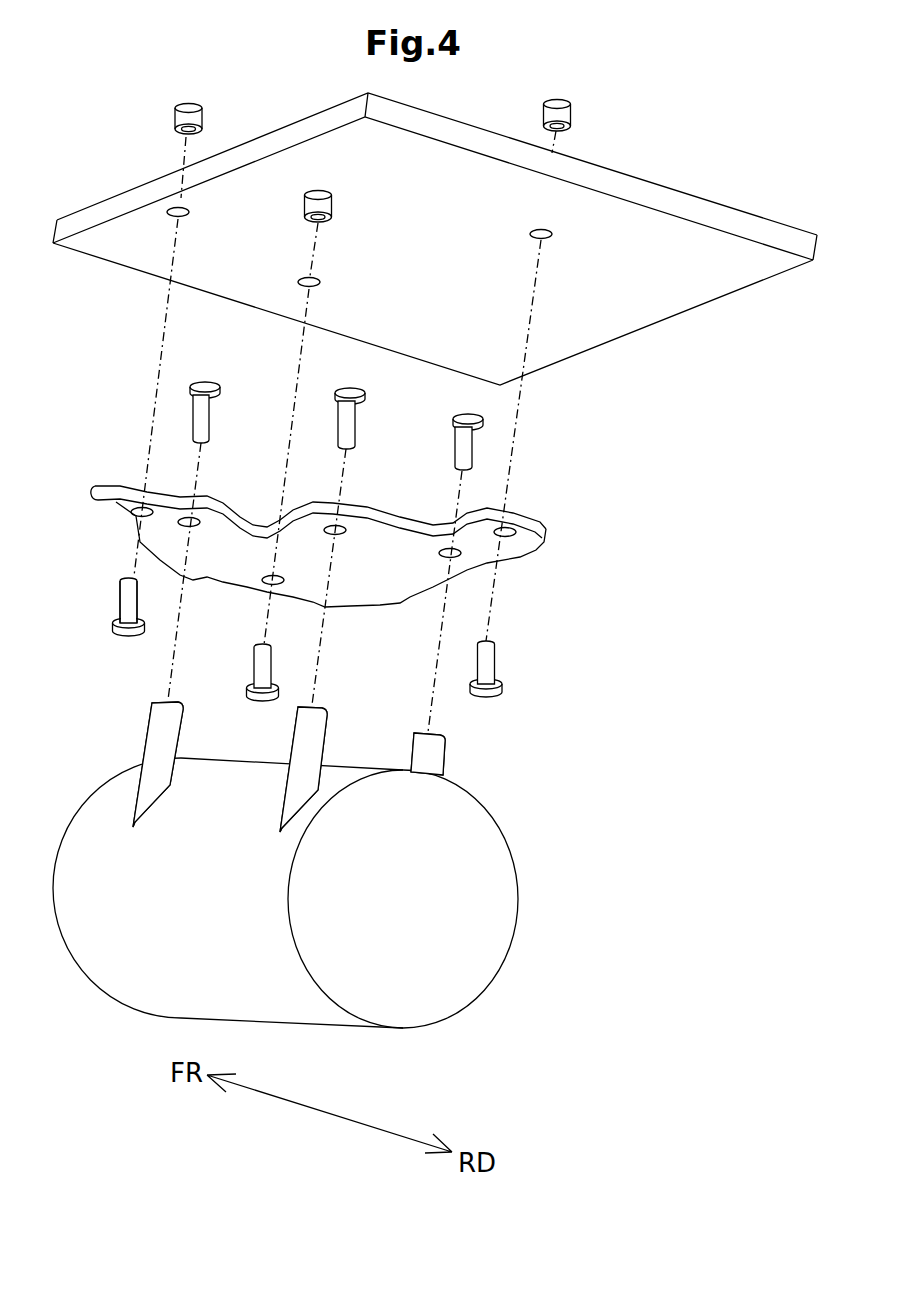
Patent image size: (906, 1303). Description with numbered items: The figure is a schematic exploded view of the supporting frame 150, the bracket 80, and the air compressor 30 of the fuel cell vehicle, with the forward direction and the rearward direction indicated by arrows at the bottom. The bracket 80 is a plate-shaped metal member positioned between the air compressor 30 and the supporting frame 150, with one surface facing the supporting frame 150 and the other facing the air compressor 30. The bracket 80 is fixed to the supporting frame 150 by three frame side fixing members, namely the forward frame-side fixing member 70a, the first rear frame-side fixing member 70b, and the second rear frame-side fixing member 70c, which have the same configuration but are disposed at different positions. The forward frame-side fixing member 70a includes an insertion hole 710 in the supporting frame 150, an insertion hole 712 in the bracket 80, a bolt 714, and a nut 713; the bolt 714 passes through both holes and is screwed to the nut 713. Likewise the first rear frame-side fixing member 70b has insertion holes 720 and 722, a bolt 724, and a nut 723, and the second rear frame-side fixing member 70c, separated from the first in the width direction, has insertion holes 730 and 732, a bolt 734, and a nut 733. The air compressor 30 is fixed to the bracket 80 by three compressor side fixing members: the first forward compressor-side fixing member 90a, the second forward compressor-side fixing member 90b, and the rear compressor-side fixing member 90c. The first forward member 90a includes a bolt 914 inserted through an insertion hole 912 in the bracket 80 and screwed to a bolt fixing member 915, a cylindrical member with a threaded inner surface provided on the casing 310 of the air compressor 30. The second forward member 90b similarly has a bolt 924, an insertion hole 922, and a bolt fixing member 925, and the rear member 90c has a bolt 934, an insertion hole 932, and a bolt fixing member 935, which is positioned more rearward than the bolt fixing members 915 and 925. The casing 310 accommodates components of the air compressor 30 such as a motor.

The supporting frame 150 is at (712, 216).
The forward frame-side fixing member 70a is at (105, 370).
The first rear frame-side fixing member 70b is at (251, 398).
The second rear frame-side fixing member 70c is at (597, 399).
The nut 713 is at (175, 112).
The insertion hole 710 is at (172, 217).
The insertion hole 712 is at (136, 516).
The bolt 714 is at (122, 598).
The nut 723 is at (303, 203).
The insertion hole 720 is at (303, 288).
The insertion hole 722 is at (262, 583).
The bolt 724 is at (254, 675).
The nut 733 is at (572, 115).
The insertion hole 730 is at (546, 240).
The insertion hole 732 is at (512, 537).
The bolt 734 is at (496, 660).
The bracket 80 is at (561, 518).
The first forward compressor-side fixing member 90a is at (325, 601).
The second forward compressor-side fixing member 90b is at (163, 604).
The rear compressor-side fixing member 90c is at (467, 594).
The bolt 914 is at (353, 392).
The insertion hole 912 is at (343, 534).
The bolt fixing member 915 is at (308, 726).
The bolt 924 is at (210, 411).
The insertion hole 922 is at (190, 533).
The bolt fixing member 925 is at (158, 720).
The bolt 934 is at (458, 447).
The insertion hole 932 is at (443, 559).
The bolt fixing member 935 is at (430, 748).
The air compressor 30 is at (332, 893).
The casing 310 is at (520, 878).